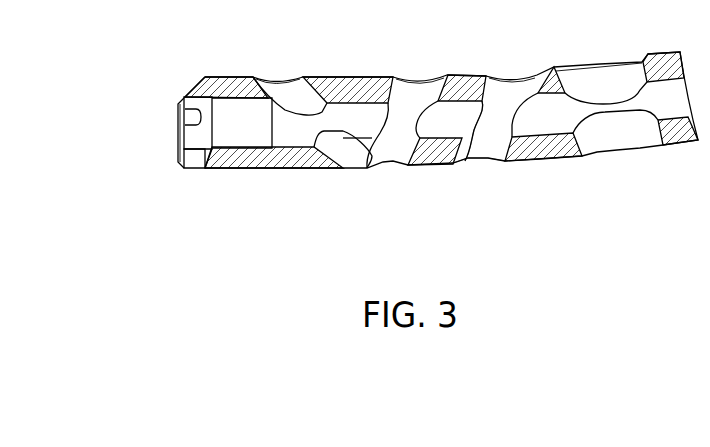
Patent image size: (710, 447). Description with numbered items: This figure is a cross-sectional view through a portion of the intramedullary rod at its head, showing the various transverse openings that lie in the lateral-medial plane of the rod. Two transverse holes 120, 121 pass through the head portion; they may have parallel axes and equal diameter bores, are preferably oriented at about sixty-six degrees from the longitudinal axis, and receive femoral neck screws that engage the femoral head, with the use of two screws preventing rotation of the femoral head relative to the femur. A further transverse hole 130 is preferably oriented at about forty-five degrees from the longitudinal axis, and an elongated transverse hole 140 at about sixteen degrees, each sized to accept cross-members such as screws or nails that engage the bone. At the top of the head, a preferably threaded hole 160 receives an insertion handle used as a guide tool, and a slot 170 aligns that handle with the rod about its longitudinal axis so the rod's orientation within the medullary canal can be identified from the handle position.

The transverse hole 120 is at (388, 167).
The transverse hole 121 is at (477, 161).
The transverse hole 130 is at (353, 168).
The elongated transverse hole 140 is at (620, 147).
The hole 160 is at (224, 132).
The slot 170 is at (197, 160).